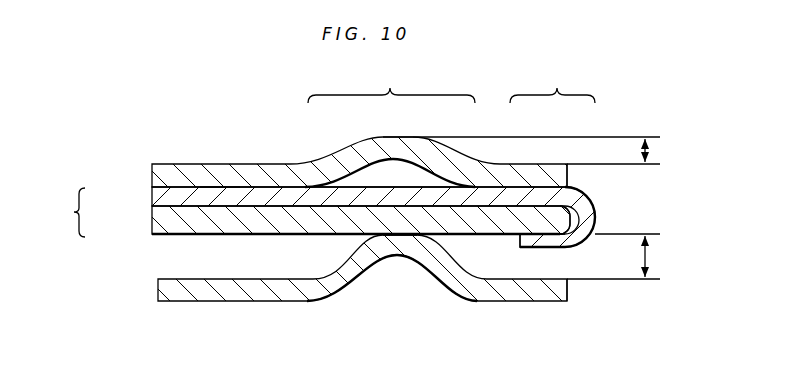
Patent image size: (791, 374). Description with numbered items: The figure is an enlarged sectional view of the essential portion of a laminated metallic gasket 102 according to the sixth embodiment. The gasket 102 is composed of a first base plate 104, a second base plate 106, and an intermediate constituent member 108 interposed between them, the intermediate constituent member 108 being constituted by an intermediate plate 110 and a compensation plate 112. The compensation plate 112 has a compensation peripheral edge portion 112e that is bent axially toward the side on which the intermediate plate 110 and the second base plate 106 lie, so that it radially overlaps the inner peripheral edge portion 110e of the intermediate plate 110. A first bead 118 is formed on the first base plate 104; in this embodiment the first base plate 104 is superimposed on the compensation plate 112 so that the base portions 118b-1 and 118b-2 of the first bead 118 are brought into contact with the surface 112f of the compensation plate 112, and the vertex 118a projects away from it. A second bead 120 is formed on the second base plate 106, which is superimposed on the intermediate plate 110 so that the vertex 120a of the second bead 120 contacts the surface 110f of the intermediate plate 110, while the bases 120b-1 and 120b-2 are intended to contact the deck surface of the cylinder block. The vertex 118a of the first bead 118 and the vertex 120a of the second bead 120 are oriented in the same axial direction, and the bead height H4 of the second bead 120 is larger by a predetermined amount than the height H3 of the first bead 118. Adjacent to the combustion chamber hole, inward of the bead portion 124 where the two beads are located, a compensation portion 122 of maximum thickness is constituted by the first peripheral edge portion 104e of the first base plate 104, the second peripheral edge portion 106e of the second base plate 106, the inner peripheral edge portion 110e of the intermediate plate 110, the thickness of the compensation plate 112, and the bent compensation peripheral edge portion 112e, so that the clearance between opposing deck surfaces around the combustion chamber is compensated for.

The laminated metallic gasket 102 is at (173, 142).
The first base plate 104 is at (148, 173).
The first peripheral edge portion 104e is at (560, 176).
The second base plate 106 is at (152, 290).
The second peripheral edge portion 106e is at (541, 294).
The intermediate constituent member 108 is at (60, 212).
The intermediate plate 110 is at (148, 223).
The inner peripheral edge portion 110e is at (560, 219).
The surface of intermediate plate 110f is at (250, 237).
The compensation plate 112 is at (148, 197).
The compensation peripheral edge portion 112e is at (549, 248).
The surface of compensation plate 112f is at (216, 184).
The first bead 118 is at (431, 151).
The vertex of first bead 118a is at (394, 136).
The base portion of first bead 118b-1 is at (477, 190).
The base portion of first bead 118b-2 is at (310, 190).
The second bead 120 is at (431, 265).
The vertex of second bead 120a is at (404, 232).
The base of second bead 120b-1 is at (465, 304).
The base of second bead 120b-2 is at (321, 304).
The compensation portion 122 is at (552, 84).
The bead portion 124 is at (391, 84).
The height of first bead H3 is at (650, 150).
The bead height of second bead H4 is at (650, 258).